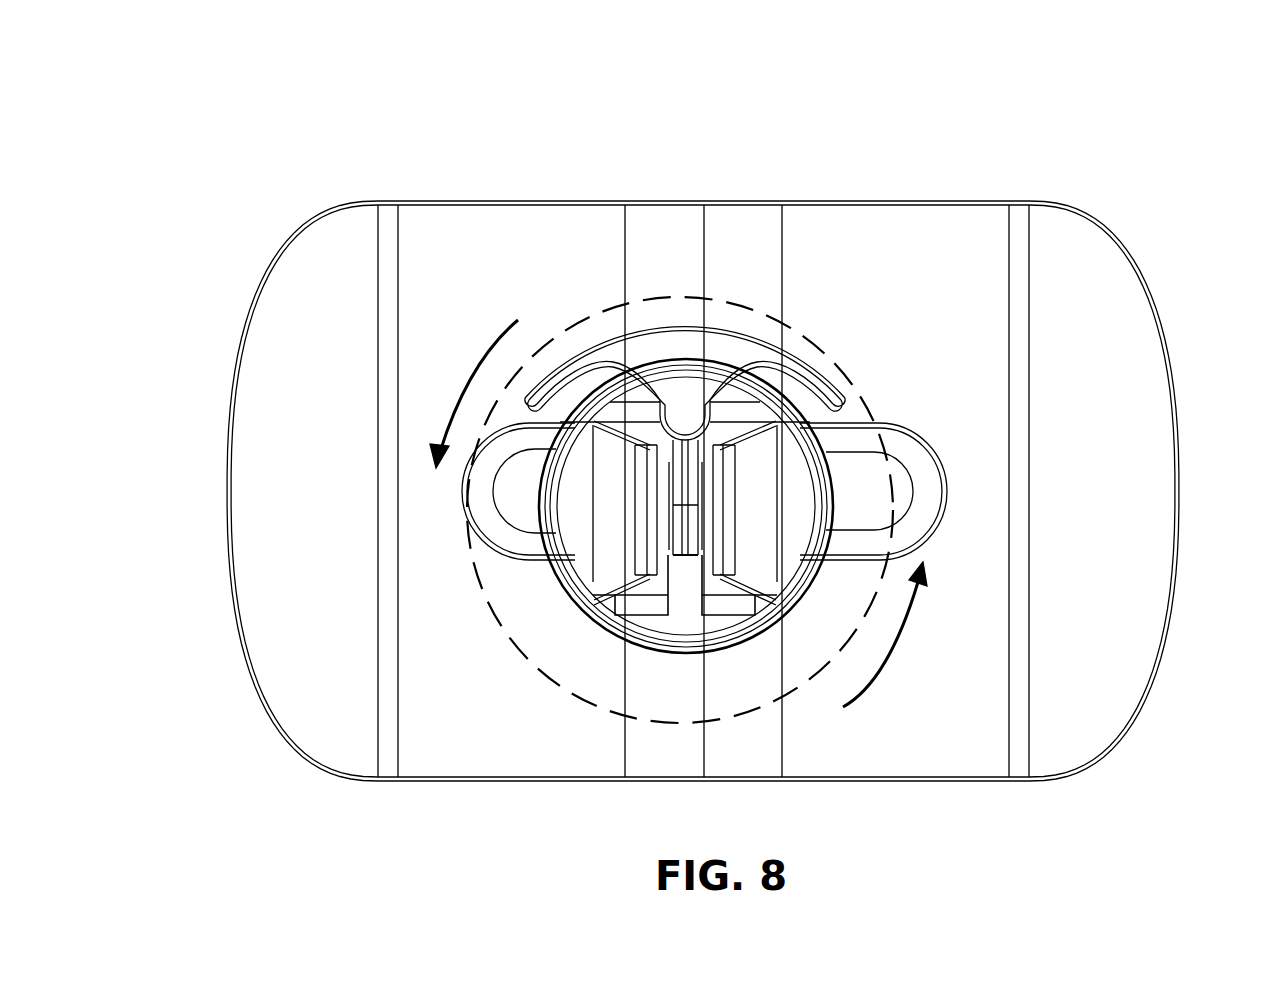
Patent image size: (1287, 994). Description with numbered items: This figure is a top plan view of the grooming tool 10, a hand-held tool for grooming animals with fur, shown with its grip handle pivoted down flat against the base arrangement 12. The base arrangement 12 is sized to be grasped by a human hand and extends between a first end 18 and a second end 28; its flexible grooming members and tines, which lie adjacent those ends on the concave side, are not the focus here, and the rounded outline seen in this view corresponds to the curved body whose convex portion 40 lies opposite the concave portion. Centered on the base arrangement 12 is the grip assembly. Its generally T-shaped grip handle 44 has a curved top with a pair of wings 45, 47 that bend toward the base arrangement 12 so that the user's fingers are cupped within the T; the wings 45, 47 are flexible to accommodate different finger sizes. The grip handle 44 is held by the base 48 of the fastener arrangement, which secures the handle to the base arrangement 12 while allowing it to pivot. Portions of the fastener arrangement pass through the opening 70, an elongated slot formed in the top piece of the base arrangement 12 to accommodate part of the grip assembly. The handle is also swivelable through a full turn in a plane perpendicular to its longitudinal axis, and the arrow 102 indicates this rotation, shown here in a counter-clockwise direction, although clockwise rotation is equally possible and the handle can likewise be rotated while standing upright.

The grooming tool 10 is at (1068, 146).
The base arrangement 12 is at (702, 502).
The first end 18 is at (1177, 497).
The second end 28 is at (228, 458).
The convex portion 40 is at (927, 759).
The grip handle 44 is at (739, 334).
The wing 45 is at (847, 393).
The wing 47 is at (532, 392).
The base 48 is at (585, 620).
The opening 70 is at (905, 497).
The arrow 102 is at (470, 363).